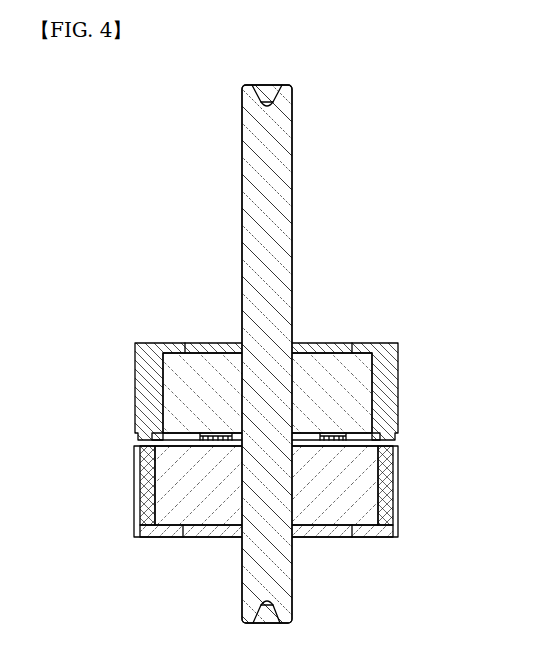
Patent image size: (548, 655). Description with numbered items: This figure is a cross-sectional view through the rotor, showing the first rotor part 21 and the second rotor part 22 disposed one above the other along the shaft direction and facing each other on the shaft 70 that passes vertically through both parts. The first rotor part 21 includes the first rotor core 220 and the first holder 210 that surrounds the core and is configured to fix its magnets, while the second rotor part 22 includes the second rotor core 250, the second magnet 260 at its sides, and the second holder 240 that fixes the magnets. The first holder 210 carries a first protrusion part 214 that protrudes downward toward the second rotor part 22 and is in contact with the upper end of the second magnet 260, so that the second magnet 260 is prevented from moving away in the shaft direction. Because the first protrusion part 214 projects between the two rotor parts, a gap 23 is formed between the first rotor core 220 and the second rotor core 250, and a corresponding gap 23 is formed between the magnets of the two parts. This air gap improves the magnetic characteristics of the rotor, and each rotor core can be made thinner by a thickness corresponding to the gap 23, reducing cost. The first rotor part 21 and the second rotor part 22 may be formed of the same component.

The shaft 70 is at (279, 171).
The first rotor part 21 is at (291, 392).
The first holder 210 is at (387, 392).
The first rotor core 220 is at (368, 364).
The first protrusion part 214 is at (385, 438).
The gap 23 is at (136, 434).
The second rotor part 22 is at (292, 510).
The second magnet 260 is at (388, 473).
The second rotor core 250 is at (320, 527).
The second holder 240 is at (370, 527).